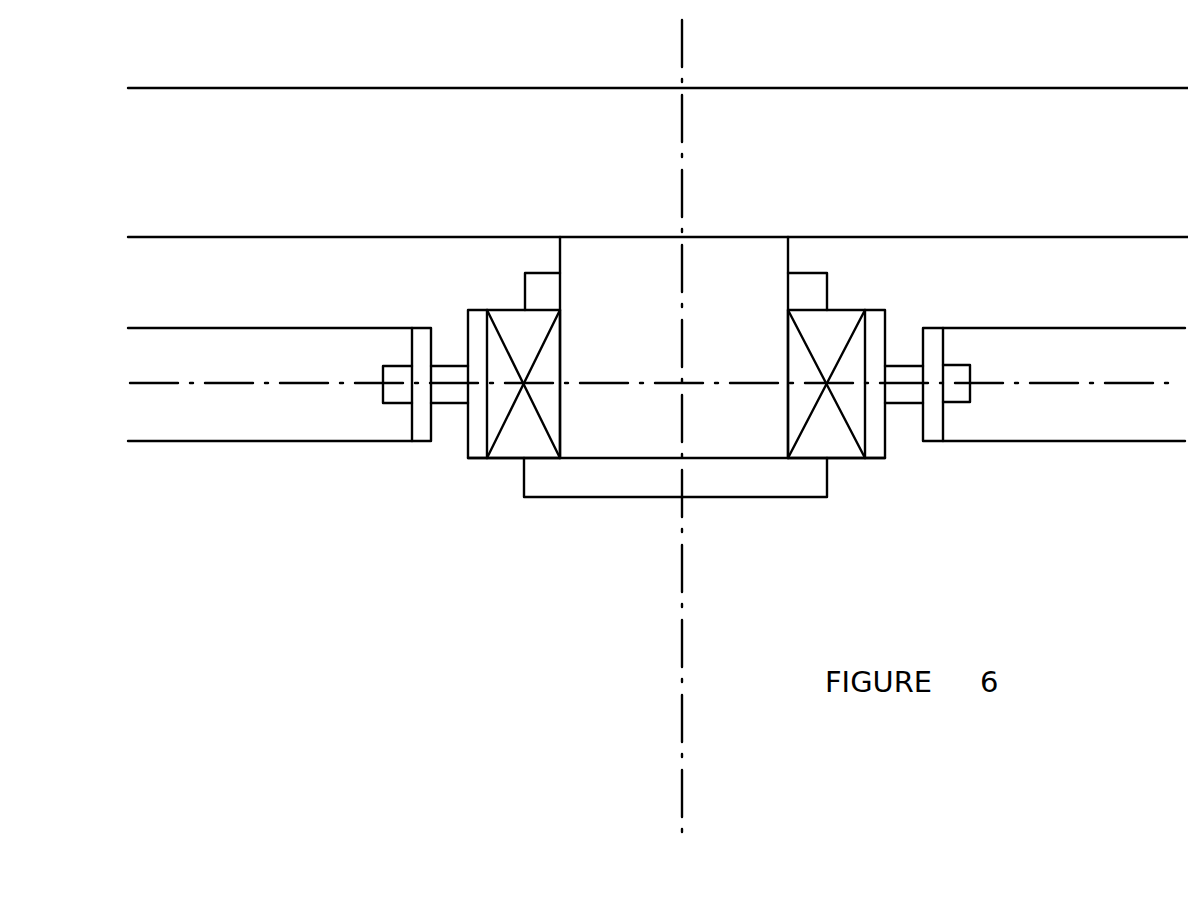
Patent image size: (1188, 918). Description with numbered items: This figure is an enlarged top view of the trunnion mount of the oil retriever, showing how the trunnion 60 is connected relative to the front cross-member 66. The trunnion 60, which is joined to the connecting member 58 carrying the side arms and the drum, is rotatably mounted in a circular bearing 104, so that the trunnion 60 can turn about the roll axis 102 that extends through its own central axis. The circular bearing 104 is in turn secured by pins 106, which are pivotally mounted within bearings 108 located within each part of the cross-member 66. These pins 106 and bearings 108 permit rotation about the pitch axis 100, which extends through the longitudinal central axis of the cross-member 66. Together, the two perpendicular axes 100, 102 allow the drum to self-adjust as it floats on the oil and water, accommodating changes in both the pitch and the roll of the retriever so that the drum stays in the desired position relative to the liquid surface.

The connecting member 58 is at (658, 80).
The trunnion 60 is at (658, 330).
The cross-member 66 is at (656, 432).
The pitch axis 100 is at (655, 320).
The roll axis 102 is at (724, 431).
The circular bearing 104 is at (665, 316).
The pin 106 is at (657, 486).
The bearing 108 is at (617, 453).